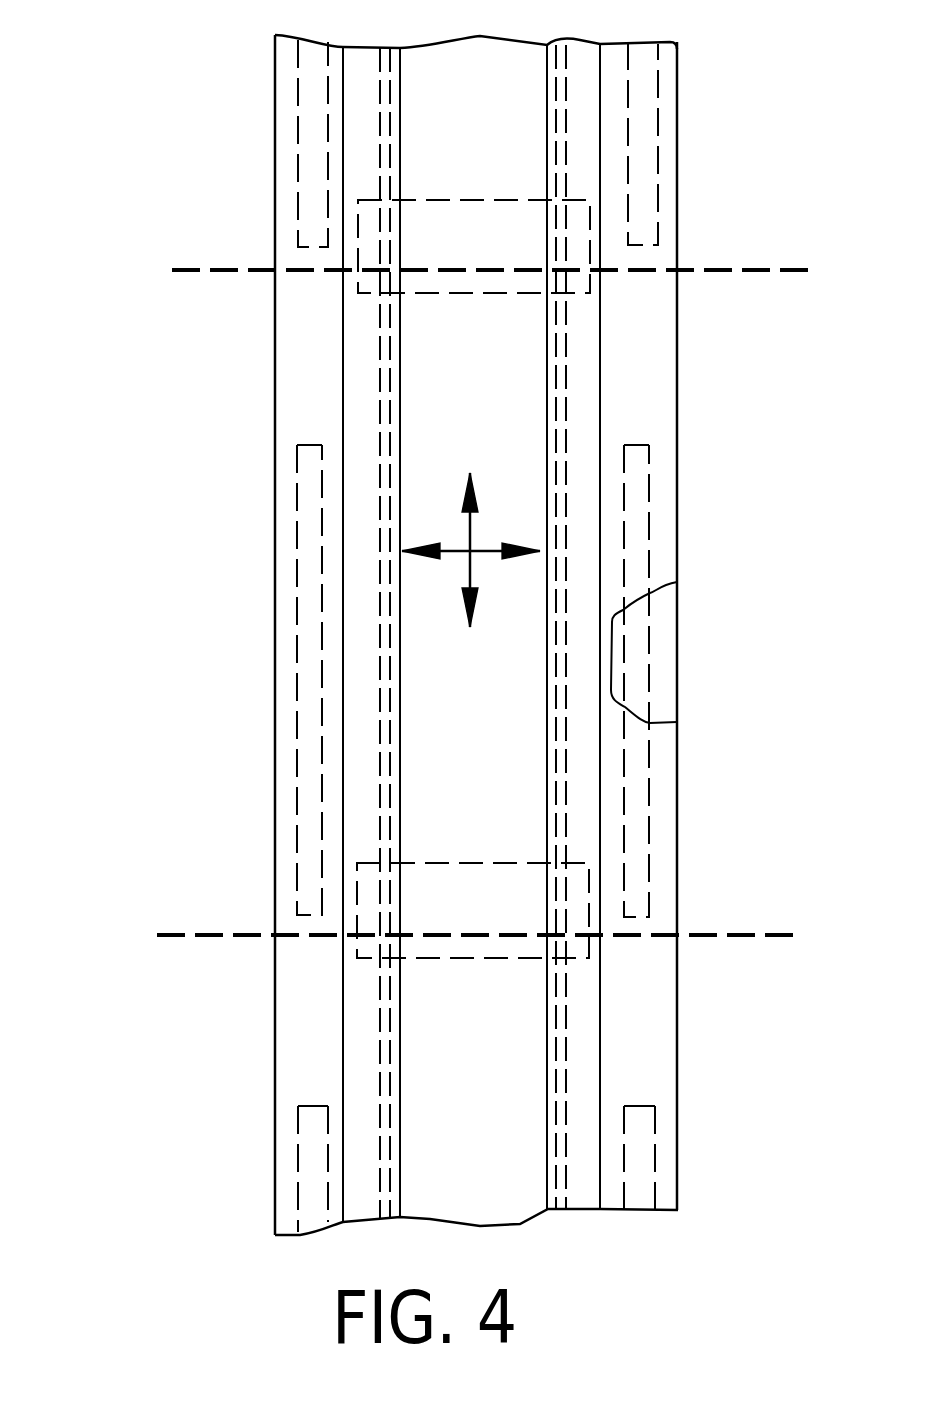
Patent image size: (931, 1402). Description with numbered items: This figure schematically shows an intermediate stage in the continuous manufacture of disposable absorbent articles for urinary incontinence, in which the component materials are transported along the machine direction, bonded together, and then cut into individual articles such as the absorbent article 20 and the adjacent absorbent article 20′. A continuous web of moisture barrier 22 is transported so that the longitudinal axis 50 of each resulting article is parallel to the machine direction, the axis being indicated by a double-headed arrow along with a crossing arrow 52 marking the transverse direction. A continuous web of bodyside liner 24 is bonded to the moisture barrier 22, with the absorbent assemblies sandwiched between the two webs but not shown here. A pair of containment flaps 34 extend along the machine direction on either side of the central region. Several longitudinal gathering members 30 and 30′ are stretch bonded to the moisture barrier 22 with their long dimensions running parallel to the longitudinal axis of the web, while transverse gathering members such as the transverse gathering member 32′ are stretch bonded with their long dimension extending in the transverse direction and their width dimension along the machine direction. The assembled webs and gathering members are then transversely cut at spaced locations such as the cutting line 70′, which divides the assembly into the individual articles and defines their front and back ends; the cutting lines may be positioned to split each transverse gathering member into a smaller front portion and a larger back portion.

The absorbent article 20 is at (233, 363).
The absorbent article 20′ is at (235, 89).
The moisture barrier 22 is at (665, 708).
The bodyside liner 24 is at (658, 364).
The longitudinal gathering member 30 is at (298, 475).
The longitudinal gathering member 30′ is at (658, 108).
The transverse gathering member 32′ is at (480, 200).
The containment flap 34 is at (372, 370).
The longitudinal axis 50 is at (470, 527).
The transverse direction 52 is at (483, 553).
The cutting line 70′ is at (730, 270).